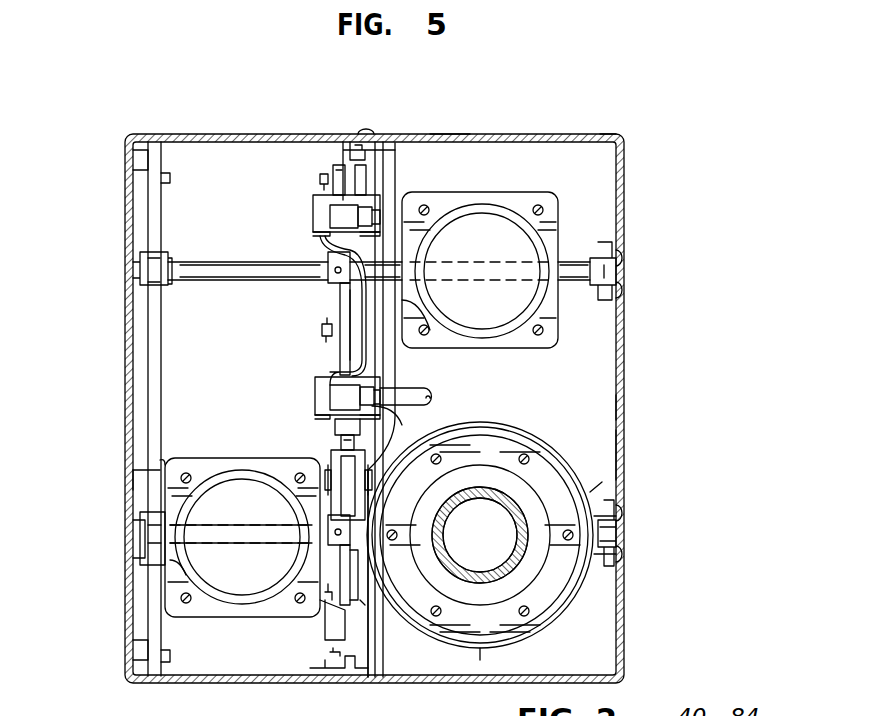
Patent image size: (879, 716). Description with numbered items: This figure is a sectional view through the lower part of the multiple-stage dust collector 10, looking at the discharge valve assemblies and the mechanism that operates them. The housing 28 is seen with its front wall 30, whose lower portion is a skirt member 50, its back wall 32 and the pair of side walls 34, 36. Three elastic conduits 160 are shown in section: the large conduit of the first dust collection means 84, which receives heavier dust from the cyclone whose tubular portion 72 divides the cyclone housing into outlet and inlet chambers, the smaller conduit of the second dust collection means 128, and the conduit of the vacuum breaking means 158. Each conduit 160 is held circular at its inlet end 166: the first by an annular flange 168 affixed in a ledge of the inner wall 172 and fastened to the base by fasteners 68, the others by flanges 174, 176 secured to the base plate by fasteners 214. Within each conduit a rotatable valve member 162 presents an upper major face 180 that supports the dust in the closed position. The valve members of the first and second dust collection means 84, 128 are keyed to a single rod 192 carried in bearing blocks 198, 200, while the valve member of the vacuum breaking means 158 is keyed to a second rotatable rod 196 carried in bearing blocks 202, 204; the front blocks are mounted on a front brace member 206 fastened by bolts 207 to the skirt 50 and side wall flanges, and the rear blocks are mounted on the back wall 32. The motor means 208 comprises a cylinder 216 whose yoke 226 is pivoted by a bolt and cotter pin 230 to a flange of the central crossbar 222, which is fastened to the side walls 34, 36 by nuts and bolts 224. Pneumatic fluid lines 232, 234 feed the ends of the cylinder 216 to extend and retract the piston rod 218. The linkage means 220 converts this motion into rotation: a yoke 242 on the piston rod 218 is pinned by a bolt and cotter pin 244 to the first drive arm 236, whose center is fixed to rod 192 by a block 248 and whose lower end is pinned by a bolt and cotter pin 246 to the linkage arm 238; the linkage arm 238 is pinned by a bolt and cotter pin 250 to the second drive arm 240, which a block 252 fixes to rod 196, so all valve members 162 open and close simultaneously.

The multiple-stage dust collector 10 is at (658, 152).
The housing 28 is at (626, 457).
The front wall 30 is at (125, 403).
The back wall 32 is at (623, 406).
The side wall 34 is at (452, 134).
The side wall 36 is at (392, 685).
The skirt member 50 is at (133, 478).
The fasteners 68 is at (527, 458).
The tubular portion 72 is at (500, 450).
The first dust collection means 84 is at (586, 606).
The second dust collection means 128 is at (244, 642).
The vacuum breaking means 158 is at (536, 178).
The conduit 160 is at (546, 300).
The rotatable valve member 162 is at (457, 232).
The inlet end 166 is at (540, 240).
The annular flange 168 is at (458, 662).
The inner wall 172 is at (478, 332).
The flange 174 is at (228, 460).
The flange 176 is at (485, 196).
The upper major face 180 is at (504, 261).
The rod 192 is at (135, 540).
The second rotatable rod 196 is at (135, 282).
The bearing block 198 is at (142, 518).
The bearing block 200 is at (612, 535).
The bearing block 202 is at (140, 252).
The bearing block 204 is at (605, 279).
The front brace member 206 is at (150, 346).
The bolts 207 is at (168, 178).
The motor means 208 is at (302, 381).
The fasteners 214 is at (540, 207).
The cylinder 216 is at (330, 358).
The piston rod 218 is at (338, 444).
The linkage means 220 is at (318, 308).
The central crossbar 222 is at (398, 428).
The nuts and bolts 224 is at (366, 133).
The yoke 226 is at (313, 202).
The bolt and cotter pin 230 is at (320, 178).
The pneumatic fluid line 232 is at (396, 212).
The pneumatic fluid line 234 is at (426, 393).
The first drive arm 236 is at (370, 608).
The linkage arm 238 is at (336, 582).
The second drive arm 240 is at (345, 296).
The yoke 242 is at (366, 492).
The bolt and cotter pin 244 is at (366, 504).
The bolt and cotter pin 246 is at (346, 600).
The block 248 is at (330, 552).
The bolt and cotter pin 250 is at (320, 330).
The block 252 is at (326, 260).